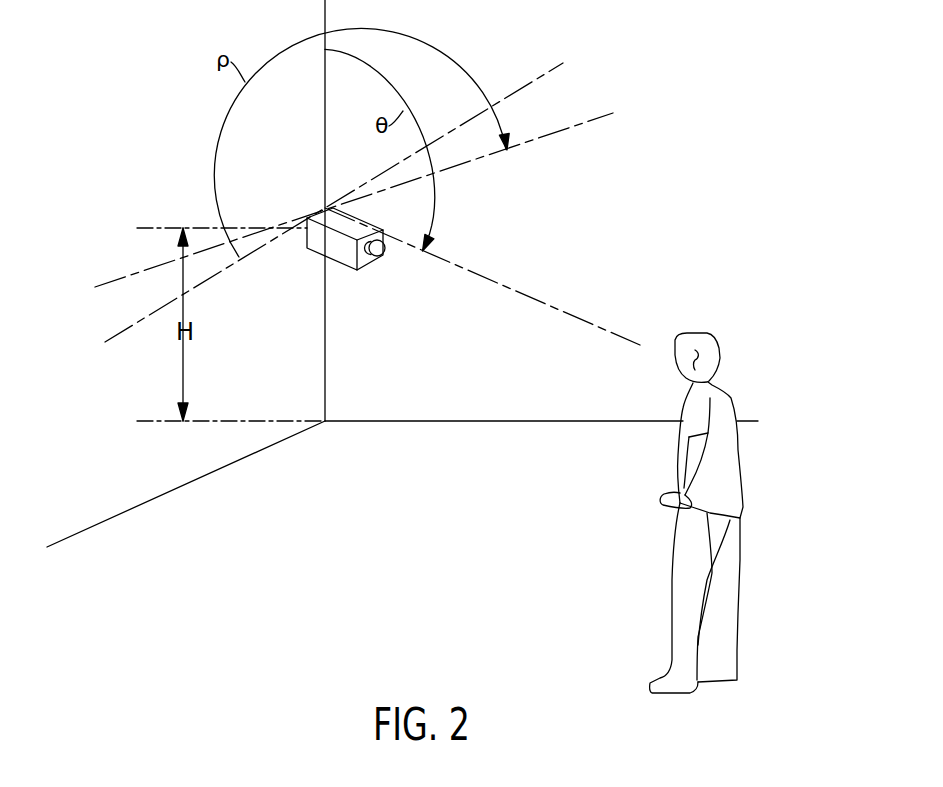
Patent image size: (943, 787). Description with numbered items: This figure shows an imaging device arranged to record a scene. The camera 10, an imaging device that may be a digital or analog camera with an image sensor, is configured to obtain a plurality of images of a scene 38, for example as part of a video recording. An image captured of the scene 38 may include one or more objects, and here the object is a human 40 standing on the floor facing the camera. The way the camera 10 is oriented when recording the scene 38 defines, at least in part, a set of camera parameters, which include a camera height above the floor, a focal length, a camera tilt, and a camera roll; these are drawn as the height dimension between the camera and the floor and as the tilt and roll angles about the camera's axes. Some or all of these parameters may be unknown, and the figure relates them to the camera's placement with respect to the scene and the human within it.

The imaging device 10 is at (363, 270).
The scene 38 is at (669, 64).
The human 40 is at (740, 510).